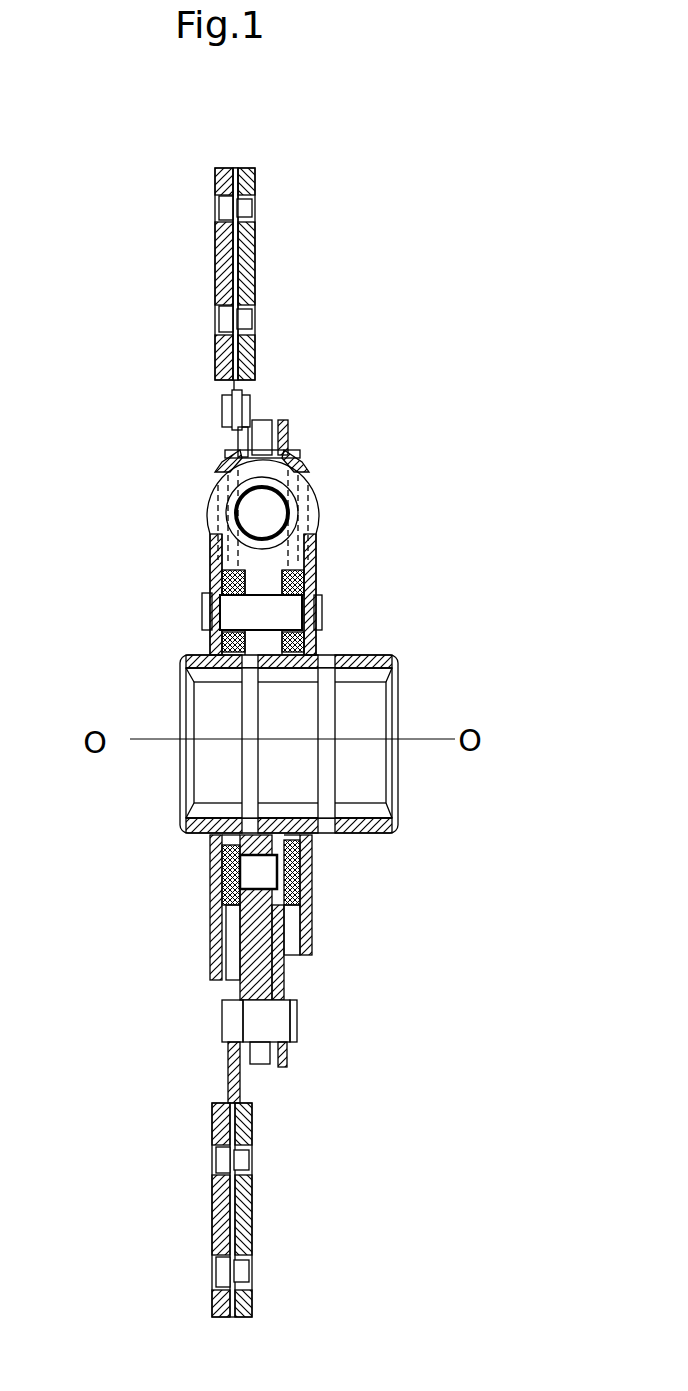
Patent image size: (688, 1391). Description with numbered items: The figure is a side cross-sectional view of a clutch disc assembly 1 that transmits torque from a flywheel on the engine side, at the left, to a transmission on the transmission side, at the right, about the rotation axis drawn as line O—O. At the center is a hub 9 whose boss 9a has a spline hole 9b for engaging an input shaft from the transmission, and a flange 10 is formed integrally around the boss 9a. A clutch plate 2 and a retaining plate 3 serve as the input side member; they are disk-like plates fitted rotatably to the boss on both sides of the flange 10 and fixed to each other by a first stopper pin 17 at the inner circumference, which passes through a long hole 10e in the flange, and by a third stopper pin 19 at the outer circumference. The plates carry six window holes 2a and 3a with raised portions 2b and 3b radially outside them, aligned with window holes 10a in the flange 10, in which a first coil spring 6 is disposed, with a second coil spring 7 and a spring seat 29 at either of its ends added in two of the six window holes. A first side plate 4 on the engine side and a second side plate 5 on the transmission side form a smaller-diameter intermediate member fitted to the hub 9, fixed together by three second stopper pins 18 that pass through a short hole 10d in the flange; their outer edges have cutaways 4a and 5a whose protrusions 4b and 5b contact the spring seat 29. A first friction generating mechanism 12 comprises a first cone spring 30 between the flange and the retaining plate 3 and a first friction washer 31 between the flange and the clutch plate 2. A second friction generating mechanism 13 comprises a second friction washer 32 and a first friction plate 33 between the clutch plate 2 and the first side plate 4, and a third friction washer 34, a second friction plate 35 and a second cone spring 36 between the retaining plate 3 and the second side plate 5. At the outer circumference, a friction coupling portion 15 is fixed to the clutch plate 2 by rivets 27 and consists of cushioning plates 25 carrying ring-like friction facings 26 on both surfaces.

The clutch disc assembly 1 is at (429, 357).
The clutch plate 2 is at (210, 956).
The window holes 2a is at (212, 565).
The raised portions 2b is at (220, 455).
The retaining plate 3 is at (286, 946).
The window holes 3a is at (298, 520).
The raised portions 3b is at (300, 455).
The first side plate 4 is at (216, 896).
The cutaways 4a is at (216, 576).
The protrusions 4b is at (210, 492).
The second side plate 5 is at (305, 886).
The cutaways 5a is at (318, 552).
The protrusions 5b is at (320, 490).
The first coil spring 6 is at (303, 470).
The second coil spring 7 is at (208, 480).
The hub 9 is at (406, 642).
The boss 9a is at (400, 661).
The spline hole 9b is at (355, 676).
The flange 10 is at (263, 966).
The window holes 10a is at (268, 436).
The short hole 10d is at (220, 606).
The long hole 10e is at (226, 848).
The first friction generating mechanism 12 is at (235, 931).
The second friction generating mechanism 13 is at (300, 926).
The friction coupling portion 15 is at (286, 212).
The first stopper pin 17 is at (245, 870).
The second stopper pin 18 is at (220, 614).
The third stopper pin 19 is at (268, 1020).
The cushioning plates 25 is at (226, 406).
The friction facings 26 is at (225, 256).
The rivets 27 is at (253, 400).
The spring seat 29 is at (264, 512).
The first cone spring 30 is at (258, 845).
The first friction washer 31 is at (236, 668).
The second friction washer 32 is at (206, 660).
The first friction plate 33 is at (206, 640).
The third friction washer 34 is at (294, 668).
The second friction plate 35 is at (320, 656).
The second cone spring 36 is at (316, 650).